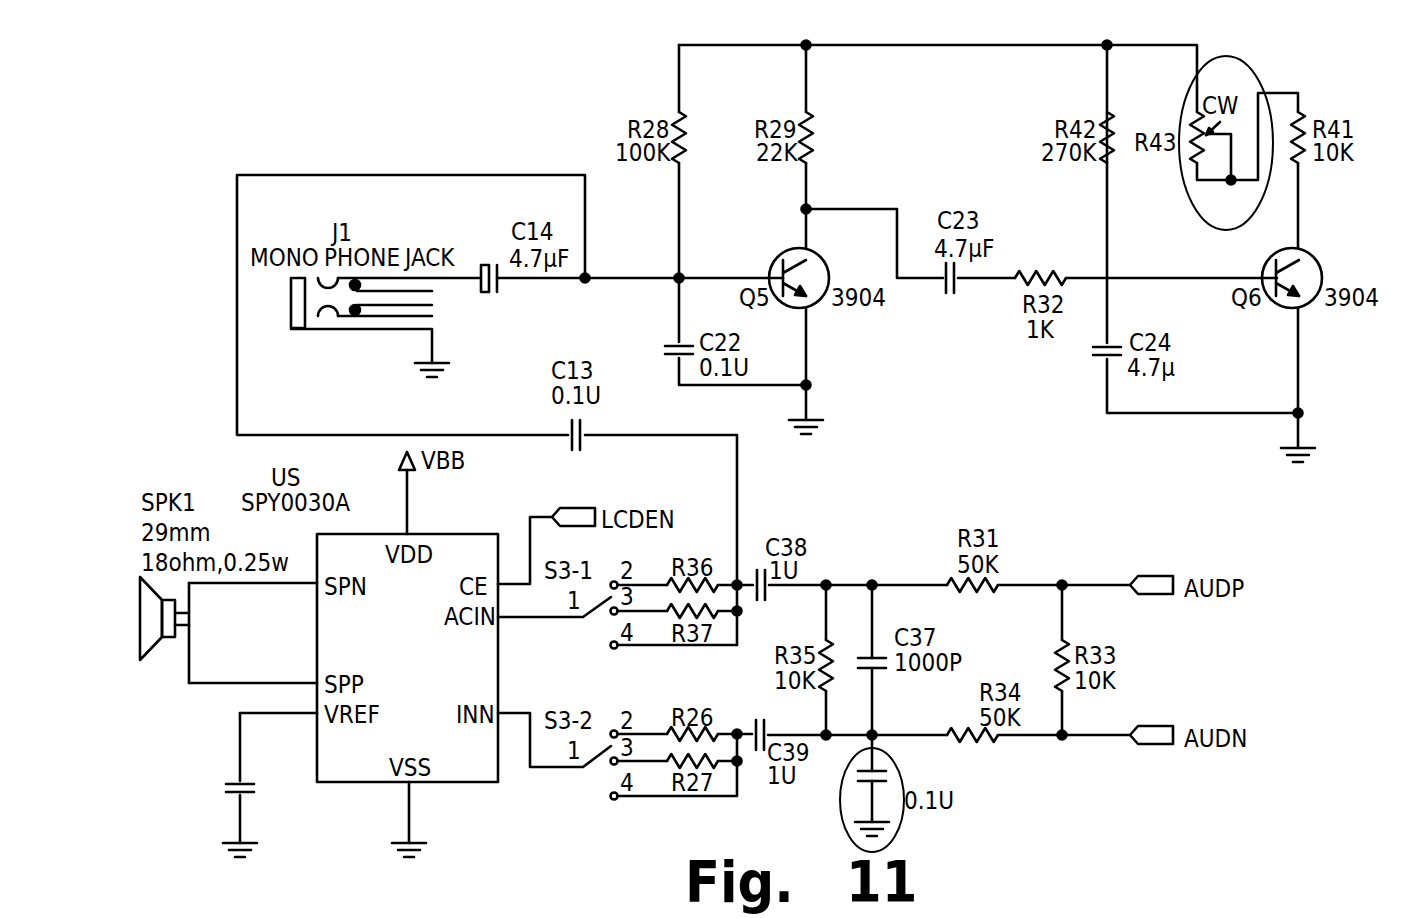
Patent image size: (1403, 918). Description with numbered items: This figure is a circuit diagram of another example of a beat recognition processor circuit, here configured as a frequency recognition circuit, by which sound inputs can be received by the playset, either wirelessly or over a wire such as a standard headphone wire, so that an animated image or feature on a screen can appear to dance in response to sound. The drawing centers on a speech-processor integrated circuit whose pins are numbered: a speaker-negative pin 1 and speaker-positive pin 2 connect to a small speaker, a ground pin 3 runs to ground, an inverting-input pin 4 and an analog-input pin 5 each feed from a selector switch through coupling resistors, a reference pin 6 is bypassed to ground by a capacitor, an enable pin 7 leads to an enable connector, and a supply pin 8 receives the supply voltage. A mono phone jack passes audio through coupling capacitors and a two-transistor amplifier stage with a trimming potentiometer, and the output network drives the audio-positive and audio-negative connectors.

The SPN pin of SPY0030A 1 is at (253, 568).
The SPP pin of SPY0030A 2 is at (253, 667).
The VSS pin of SPY0030A 3 is at (409, 819).
The INN pin of SPY0030A 4 is at (554, 725).
The ACIN pin of SPY0030A 5 is at (554, 601).
The VREF pin of SPY0030A 6 is at (278, 697).
The CE pin of SPY0030A 7 is at (546, 546).
The VDD pin of SPY0030A 8 is at (401, 493).